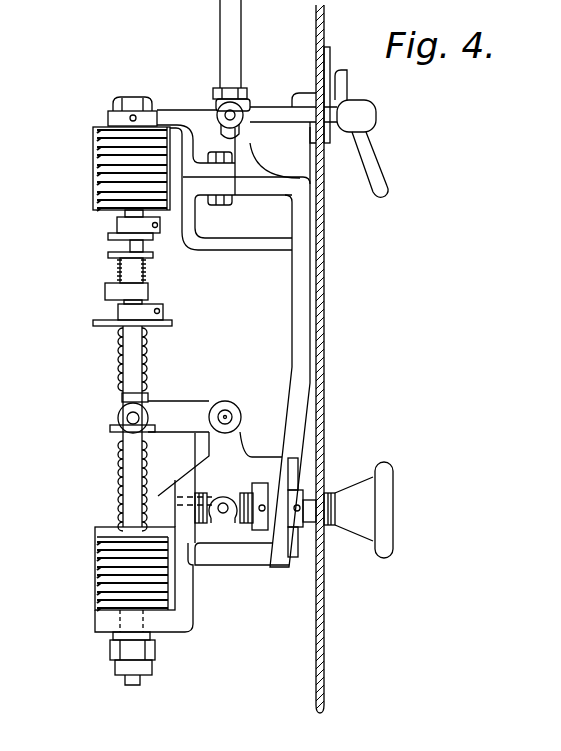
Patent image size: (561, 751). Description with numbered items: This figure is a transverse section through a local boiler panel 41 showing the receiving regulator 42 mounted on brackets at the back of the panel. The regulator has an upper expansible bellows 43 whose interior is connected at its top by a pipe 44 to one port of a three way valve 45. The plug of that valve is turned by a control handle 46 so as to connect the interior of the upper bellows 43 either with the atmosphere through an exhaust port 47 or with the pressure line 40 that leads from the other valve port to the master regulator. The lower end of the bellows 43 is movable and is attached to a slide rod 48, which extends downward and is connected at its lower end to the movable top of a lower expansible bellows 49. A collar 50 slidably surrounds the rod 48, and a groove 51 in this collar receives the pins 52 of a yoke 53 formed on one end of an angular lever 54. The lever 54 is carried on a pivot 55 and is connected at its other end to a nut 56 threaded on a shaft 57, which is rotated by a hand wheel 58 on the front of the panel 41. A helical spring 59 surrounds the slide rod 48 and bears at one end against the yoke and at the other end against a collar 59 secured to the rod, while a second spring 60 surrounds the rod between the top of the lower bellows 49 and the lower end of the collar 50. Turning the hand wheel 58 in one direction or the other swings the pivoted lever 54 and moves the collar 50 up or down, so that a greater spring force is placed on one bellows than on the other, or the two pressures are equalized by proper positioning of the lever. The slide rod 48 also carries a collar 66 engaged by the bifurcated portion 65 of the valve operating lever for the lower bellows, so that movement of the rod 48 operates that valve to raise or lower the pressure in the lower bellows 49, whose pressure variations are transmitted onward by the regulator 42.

The pressure line 40 is at (238, 47).
The local boiler panel 41 is at (322, 605).
The receiving regulator 42 is at (300, 318).
The upper expansible bellows 43 is at (110, 177).
The pipe 44 is at (193, 113).
The three way valve 45 is at (251, 106).
The control handle 46 is at (360, 117).
The exhaust port 47 is at (236, 128).
The slide rod 48 is at (135, 362).
The lower expansible bellows 49 is at (108, 565).
The collar 50 is at (148, 403).
The groove 51 is at (122, 420).
The pins 52 is at (125, 413).
The yoke 53 is at (118, 432).
The angular lever 54 is at (200, 410).
The pivot 55 is at (228, 418).
The nut 56 is at (222, 522).
The shaft 57 is at (255, 530).
The hand wheel 58 is at (387, 500).
The helical spring 59 is at (173, 322).
The second spring 60 is at (118, 493).
The bifurcated portion 65 is at (150, 267).
The collar 66 is at (127, 273).